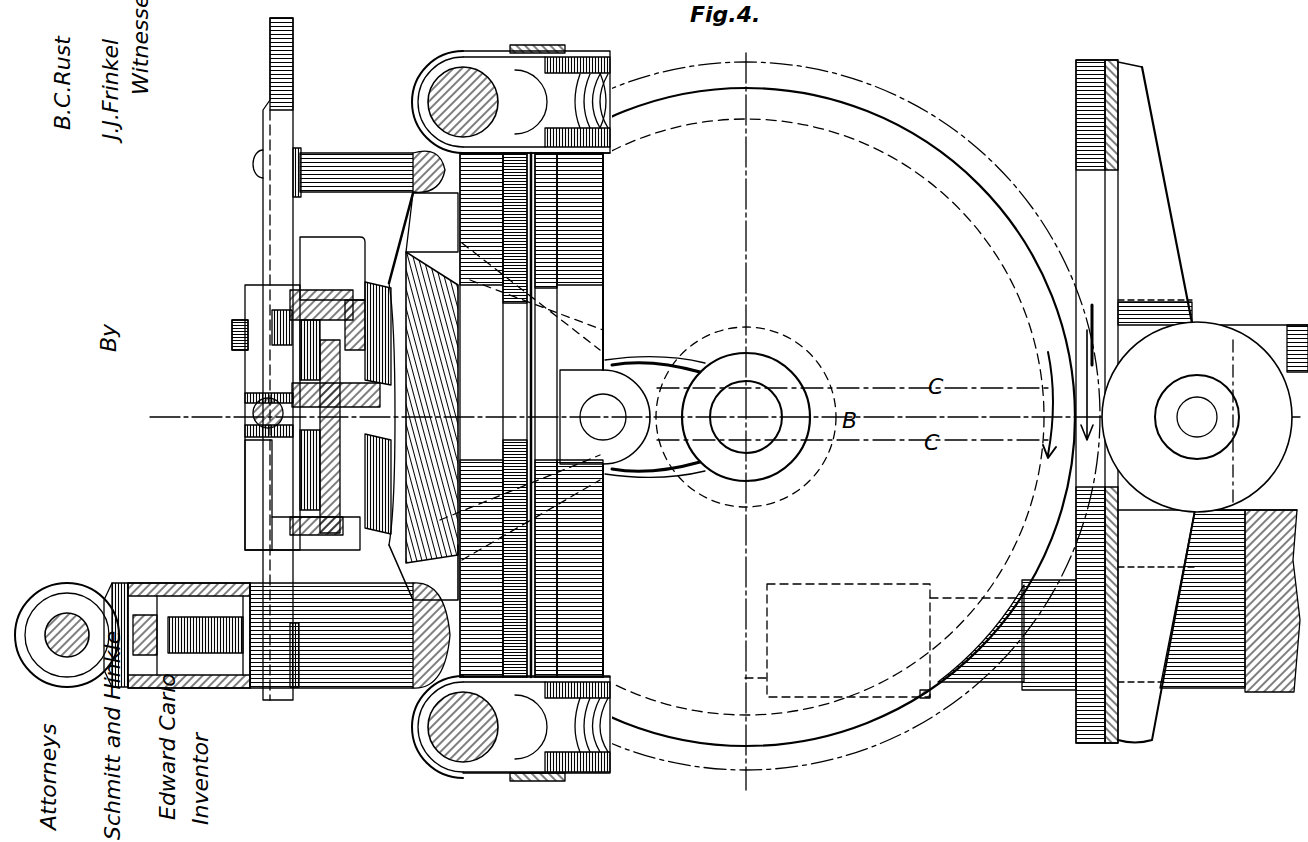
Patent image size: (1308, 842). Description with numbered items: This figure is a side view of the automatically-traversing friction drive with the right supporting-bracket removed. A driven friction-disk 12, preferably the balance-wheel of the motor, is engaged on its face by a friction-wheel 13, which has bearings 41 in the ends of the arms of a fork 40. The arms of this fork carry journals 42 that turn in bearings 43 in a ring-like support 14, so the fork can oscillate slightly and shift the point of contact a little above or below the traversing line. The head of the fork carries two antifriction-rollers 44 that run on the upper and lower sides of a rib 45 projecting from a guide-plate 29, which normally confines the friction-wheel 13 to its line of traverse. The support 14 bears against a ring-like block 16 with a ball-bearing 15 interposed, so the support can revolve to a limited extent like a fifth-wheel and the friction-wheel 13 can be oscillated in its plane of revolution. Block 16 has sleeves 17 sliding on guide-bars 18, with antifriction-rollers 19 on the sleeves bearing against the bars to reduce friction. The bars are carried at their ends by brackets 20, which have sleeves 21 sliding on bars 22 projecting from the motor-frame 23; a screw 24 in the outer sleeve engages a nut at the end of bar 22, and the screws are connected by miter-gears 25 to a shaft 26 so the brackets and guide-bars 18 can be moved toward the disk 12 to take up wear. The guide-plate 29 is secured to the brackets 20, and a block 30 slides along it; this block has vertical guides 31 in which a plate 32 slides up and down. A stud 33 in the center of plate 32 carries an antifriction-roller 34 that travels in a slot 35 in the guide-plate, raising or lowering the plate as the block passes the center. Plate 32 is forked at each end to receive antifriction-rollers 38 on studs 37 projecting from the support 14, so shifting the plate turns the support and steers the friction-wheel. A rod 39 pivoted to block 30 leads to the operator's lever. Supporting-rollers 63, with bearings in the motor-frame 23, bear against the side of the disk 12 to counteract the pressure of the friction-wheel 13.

The driven friction-disk 12 is at (1085, 180).
The friction-wheel 13 is at (746, 416).
The ring-like support 14 is at (604, 213).
The ball-bearing 15 is at (560, 272).
The ring-like block 16 is at (485, 335).
The sleeves 17 is at (450, 55).
The guide-bars 18 is at (430, 102).
The antifriction-rollers 19 is at (612, 110).
The brackets 20 is at (405, 396).
The sleeves 21 is at (930, 698).
The bars 22 is at (222, 595).
The motor-frame 23 is at (1252, 692).
The screw 24 is at (150, 670).
The gear wheel 25 is at (110, 595).
The shaft 26 is at (65, 615).
The guide-plate 29 is at (252, 402).
The block 30 is at (260, 360).
The vertical guides 31 is at (252, 458).
The plate 32 is at (264, 232).
The stud 33 is at (235, 338).
The antifriction-roller 34 is at (272, 318).
The slot 35 is at (290, 300).
The stud 37 is at (365, 160).
The antifriction-roller 38 is at (300, 152).
The rod 39 is at (255, 426).
The fork 40 is at (660, 365).
The bearings 41 is at (778, 385).
The journals 42 is at (620, 440).
The bearings 43 is at (608, 380).
The antifriction-roller 44 is at (378, 282).
The rib 45 is at (335, 417).
The supporting-rollers 63 is at (1197, 417).